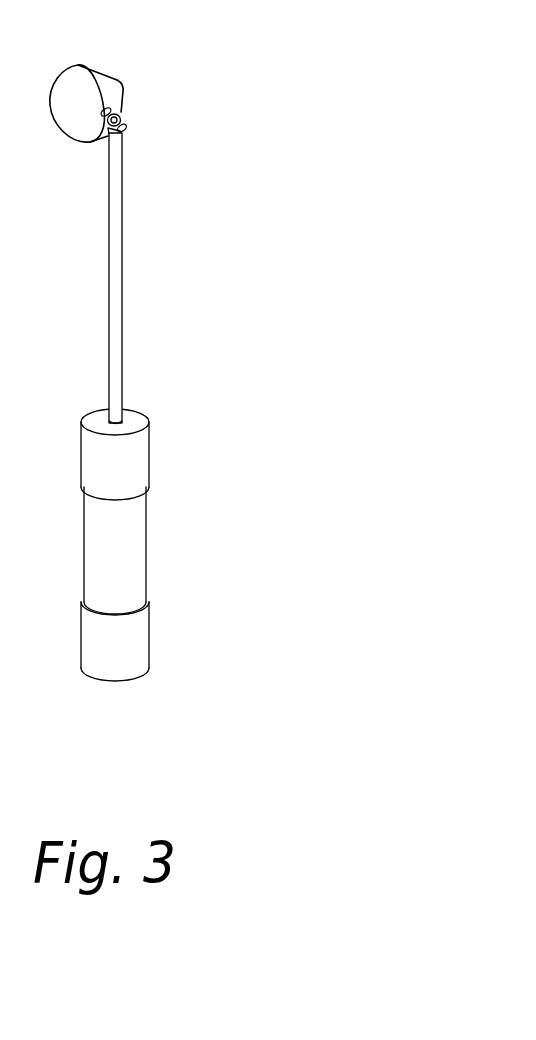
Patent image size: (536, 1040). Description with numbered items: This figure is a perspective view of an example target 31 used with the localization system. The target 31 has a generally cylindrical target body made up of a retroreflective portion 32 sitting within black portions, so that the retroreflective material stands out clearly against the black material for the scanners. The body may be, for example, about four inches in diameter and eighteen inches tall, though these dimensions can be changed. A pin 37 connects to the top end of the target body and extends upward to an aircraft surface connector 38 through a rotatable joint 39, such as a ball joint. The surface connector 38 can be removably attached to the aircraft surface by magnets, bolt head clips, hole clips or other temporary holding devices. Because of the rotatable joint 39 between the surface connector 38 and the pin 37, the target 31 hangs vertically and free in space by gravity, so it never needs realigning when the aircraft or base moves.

The target 31 is at (230, 576).
The retroreflective portion 32 is at (135, 562).
The pin 37 is at (115, 237).
The surface connector 38 is at (140, 55).
The rotatable joint 39 is at (163, 107).